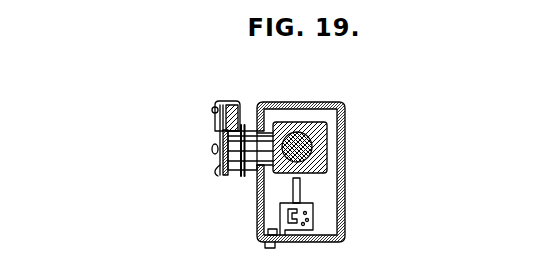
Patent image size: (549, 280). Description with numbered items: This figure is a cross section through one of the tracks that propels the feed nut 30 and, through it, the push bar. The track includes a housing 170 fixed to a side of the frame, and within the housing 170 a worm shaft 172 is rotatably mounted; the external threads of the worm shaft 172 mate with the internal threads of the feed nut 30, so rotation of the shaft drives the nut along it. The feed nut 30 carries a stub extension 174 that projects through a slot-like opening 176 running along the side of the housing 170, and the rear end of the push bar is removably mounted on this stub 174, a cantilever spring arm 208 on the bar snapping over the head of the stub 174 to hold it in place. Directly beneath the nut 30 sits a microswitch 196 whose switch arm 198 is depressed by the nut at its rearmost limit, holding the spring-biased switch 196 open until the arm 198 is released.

The feed nut 30 is at (273, 177).
The housing 170 is at (344, 176).
The worm shaft 172 is at (308, 146).
The stub extension 174 is at (241, 172).
The slot-like opening 176 is at (252, 131).
The microswitch 196 is at (290, 243).
The switch arm 198 is at (300, 196).
The cantilever spring arm 208 is at (214, 129).